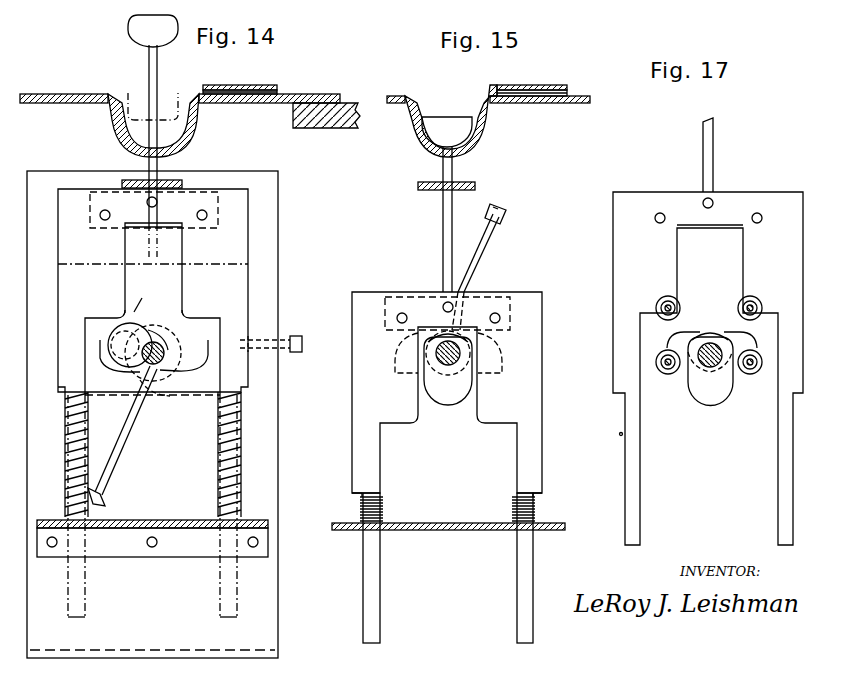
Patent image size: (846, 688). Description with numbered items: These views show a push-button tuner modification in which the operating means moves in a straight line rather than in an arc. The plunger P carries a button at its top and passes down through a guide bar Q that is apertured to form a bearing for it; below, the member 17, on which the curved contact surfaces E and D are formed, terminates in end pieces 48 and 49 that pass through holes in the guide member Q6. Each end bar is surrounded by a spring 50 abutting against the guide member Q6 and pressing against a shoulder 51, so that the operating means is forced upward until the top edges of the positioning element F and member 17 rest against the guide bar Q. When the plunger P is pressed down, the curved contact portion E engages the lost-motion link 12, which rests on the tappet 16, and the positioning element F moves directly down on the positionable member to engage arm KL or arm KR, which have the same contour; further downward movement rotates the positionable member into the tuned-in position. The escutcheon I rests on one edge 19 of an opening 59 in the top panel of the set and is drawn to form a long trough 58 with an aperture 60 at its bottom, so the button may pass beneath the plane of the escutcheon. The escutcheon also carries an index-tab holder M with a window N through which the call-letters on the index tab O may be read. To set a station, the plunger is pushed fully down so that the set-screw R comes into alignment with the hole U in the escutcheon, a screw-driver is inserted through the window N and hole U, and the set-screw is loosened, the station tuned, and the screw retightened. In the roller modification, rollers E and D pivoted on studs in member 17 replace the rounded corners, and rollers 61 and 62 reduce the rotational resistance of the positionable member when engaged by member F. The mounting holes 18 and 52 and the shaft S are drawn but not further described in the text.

In FIG. 14, the lost-motion link 12 is at (108, 332).
In FIG. 15, the lost-motion link 12 is at (467, 404).
In FIG. 17, the lost-motion link 12 is at (707, 405).
In FIG. 14, the tappet 16 is at (153, 400).
In FIG. 15, the tappet 16 is at (437, 330).
In FIG. 17, the tappet 16 is at (691, 334).
In FIG. 14, the member carrying contacts E and D 17 is at (250, 243).
In FIG. 15, the member carrying contacts E and D 17 is at (352, 311).
In FIG. 17, the member carrying contacts E and D 17 is at (613, 309).
In FIG. 14, the mounting holes 18 is at (109, 212).
In FIG. 15, the mounting holes 18 is at (402, 313).
In FIG. 17, the mounting holes 18 is at (664, 214).
In FIG. 14, the edge of opening 19 is at (319, 129).
In FIG. 14, the end piece 48 is at (79, 618).
In FIG. 15, the end piece 48 is at (382, 623).
In FIG. 17, the end piece 48 is at (643, 480).
In FIG. 14, the end piece 49 is at (228, 618).
In FIG. 15, the end piece 49 is at (515, 619).
In FIG. 17, the end piece 49 is at (778, 489).
In FIG. 14, the spring 50 is at (65, 477).
In FIG. 15, the spring 50 is at (386, 504).
In FIG. 14, the shoulder 51 is at (60, 389).
In FIG. 15, the shoulder 51 is at (360, 496).
In FIG. 14, the mounting holes in plate 52 is at (52, 548).
In FIG. 14, the drawn section of escutcheon 58 is at (132, 96).
In FIG. 15, the drawn section of escutcheon 58 is at (412, 107).
In FIG. 14, the opening in top panel 59 is at (279, 118).
In FIG. 14, the aperture 60 is at (190, 105).
In FIG. 17, the roller 61 is at (663, 374).
In FIG. 17, the roller 62 is at (753, 373).
In FIG. 14, the plunger P is at (158, 74).
In FIG. 15, the plunger P is at (442, 114).
In FIG. 17, the plunger P is at (714, 148).
In FIG. 14, the escutcheon I is at (60, 94).
In FIG. 15, the escutcheon I is at (597, 98).
In FIG. 14, the index-tab holder M is at (208, 86).
In FIG. 15, the index-tab holder M is at (560, 89).
In FIG. 14, the window N is at (250, 88).
In FIG. 15, the window N is at (527, 88).
In FIG. 14, the index tab O is at (278, 94).
In FIG. 15, the index tab O is at (548, 85).
In FIG. 14, the hole U is at (238, 103).
In FIG. 15, the hole U is at (531, 103).
In FIG. 14, the guide bar Q is at (172, 181).
In FIG. 15, the guide bar Q is at (473, 180).
In FIG. 14, the guide member Q6 is at (125, 548).
In FIG. 15, the guide member Q6 is at (432, 531).
In FIG. 14, the positioning element F is at (134, 229).
In FIG. 15, the positioning element F is at (512, 310).
In FIG. 17, the positioning element F is at (698, 229).
In FIG. 14, the curved contact surface E is at (108, 316).
In FIG. 15, the curved contact surface E is at (417, 418).
In FIG. 17, the curved contact surface E is at (663, 294).
In FIG. 14, the curved contact surface D is at (193, 316).
In FIG. 15, the curved contact surface D is at (487, 420).
In FIG. 17, the curved contact surface D is at (755, 297).
In FIG. 14, the shaft S is at (166, 350).
In FIG. 15, the shaft S is at (451, 357).
In FIG. 17, the shaft S is at (700, 368).
In FIG. 14, the arm KL is at (172, 335).
In FIG. 15, the arm KL is at (399, 348).
In FIG. 17, the arm KL is at (676, 340).
In FIG. 14, the arm KR is at (107, 362).
In FIG. 15, the arm KR is at (499, 353).
In FIG. 17, the arm KR is at (750, 345).
In FIG. 14, the set-screw R is at (110, 503).
In FIG. 15, the set-screw R is at (508, 213).